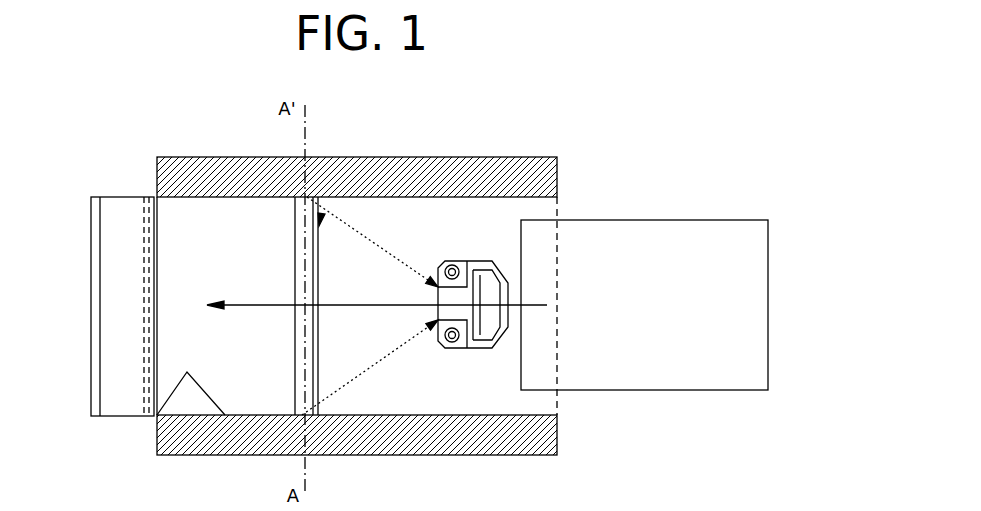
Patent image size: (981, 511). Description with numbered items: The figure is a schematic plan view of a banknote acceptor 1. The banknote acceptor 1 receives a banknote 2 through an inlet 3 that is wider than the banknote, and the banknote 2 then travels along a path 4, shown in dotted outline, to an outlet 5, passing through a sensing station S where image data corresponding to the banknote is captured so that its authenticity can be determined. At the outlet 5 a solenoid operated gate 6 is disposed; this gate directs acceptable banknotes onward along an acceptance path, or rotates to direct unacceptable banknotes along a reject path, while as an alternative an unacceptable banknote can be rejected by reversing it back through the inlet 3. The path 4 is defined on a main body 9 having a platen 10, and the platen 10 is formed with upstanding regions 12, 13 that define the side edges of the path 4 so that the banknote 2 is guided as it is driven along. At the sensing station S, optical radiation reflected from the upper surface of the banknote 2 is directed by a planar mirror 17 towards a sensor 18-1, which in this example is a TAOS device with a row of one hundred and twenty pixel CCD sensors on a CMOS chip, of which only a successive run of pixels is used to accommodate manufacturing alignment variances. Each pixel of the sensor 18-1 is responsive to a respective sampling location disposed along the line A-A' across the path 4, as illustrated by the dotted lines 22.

The banknote acceptor 1 is at (354, 307).
The banknote 2 is at (672, 220).
The inlet 3 is at (557, 208).
The path 4 is at (377, 293).
The outlet 5 is at (157, 220).
The solenoid operated gate 6 is at (115, 257).
The main body 9 is at (205, 222).
The platen 10 is at (438, 397).
The upstanding region 12 is at (157, 415).
The upstanding region 13 is at (460, 195).
The planar mirror 17 is at (302, 222).
The sensor 18-1 is at (462, 346).
The dotted lines 22 is at (395, 255).
The sensing station S is at (320, 222).